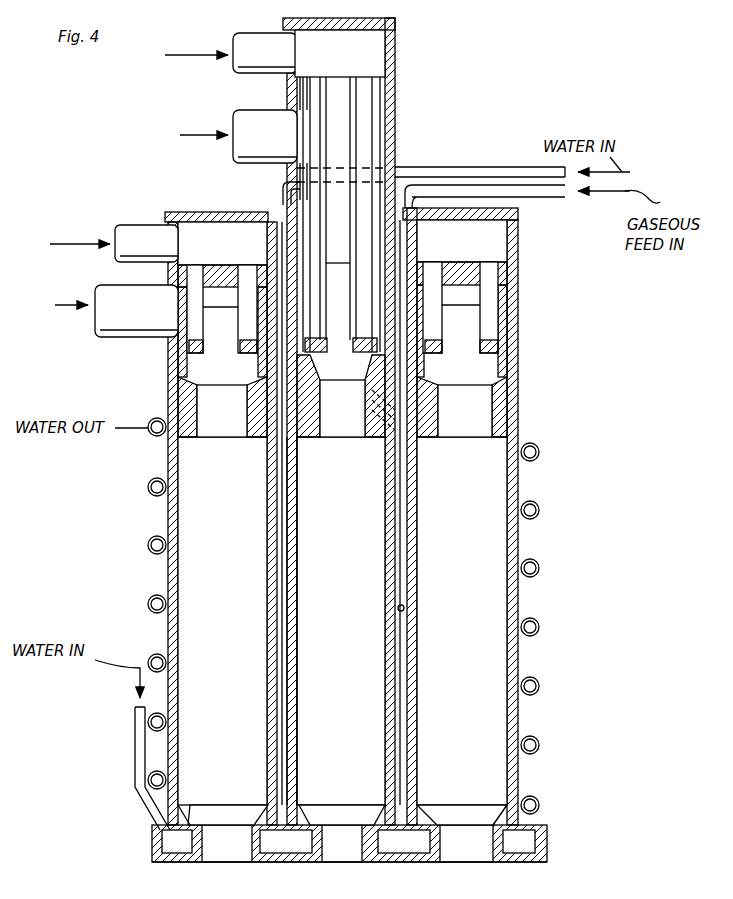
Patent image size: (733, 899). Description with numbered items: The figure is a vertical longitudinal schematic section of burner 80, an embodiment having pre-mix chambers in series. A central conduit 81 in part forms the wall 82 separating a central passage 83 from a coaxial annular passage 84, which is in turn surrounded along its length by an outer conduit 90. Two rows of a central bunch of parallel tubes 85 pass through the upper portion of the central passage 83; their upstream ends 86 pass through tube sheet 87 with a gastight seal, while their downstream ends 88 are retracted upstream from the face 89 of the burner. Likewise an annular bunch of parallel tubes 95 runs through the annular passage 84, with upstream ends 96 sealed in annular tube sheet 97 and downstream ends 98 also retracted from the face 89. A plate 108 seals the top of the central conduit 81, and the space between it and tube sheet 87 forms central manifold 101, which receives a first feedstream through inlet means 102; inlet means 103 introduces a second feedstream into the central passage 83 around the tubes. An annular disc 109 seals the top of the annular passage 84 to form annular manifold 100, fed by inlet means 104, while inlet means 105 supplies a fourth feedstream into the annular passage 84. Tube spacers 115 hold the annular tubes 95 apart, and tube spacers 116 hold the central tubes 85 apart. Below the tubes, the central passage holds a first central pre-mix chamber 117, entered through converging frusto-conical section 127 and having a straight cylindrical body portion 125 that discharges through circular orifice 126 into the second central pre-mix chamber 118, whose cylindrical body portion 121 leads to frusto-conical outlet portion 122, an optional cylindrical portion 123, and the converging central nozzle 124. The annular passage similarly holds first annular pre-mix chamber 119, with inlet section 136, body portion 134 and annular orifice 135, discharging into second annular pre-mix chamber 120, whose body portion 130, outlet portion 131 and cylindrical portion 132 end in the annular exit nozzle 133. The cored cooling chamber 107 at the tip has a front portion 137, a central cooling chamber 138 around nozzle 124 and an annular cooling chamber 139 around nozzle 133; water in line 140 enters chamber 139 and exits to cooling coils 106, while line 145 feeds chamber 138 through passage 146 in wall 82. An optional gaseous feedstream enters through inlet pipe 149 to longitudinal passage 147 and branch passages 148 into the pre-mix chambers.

The burner 80 is at (520, 330).
The central conduit 81 is at (395, 108).
The wall 82 is at (297, 642).
The central passage 83 is at (340, 53).
The annular passage 84 is at (185, 372).
The central bunch of parallel tubes 85 is at (300, 97).
The upstream ends 86 is at (383, 68).
The tube sheet 87 is at (370, 94).
The downstream ends 88 is at (320, 355).
The face 89 is at (170, 870).
The outer conduit 90 is at (520, 412).
The annular bunch of parallel tubes 95 is at (342, 268).
The upstream ends 96 is at (258, 262).
The tube sheet 97 is at (455, 215).
The downstream ends 98 is at (343, 342).
The annular manifold 100 is at (198, 212).
The central manifold 101 is at (380, 50).
The inlet means 102 is at (238, 46).
The inlet means 103 is at (238, 118).
The inlet means 104 is at (135, 228).
The inlet means 105 is at (105, 286).
The cooling coils 106 is at (148, 600).
The cored cooling chamber 107 is at (520, 840).
The plate 108 is at (360, 22).
The annular shaped disc 109 is at (180, 212).
The tube spacers 115 is at (198, 322).
The tube spacers 116 is at (300, 190).
The central pre-mix chamber 117 is at (358, 426).
The central pre-mix chamber 118 is at (357, 575).
The annular pre-mix chamber 119 is at (236, 425).
The annular pre-mix chamber 120 is at (228, 550).
The cylindrical body portion 121 is at (290, 690).
The frusto-conical outlet portion 122 is at (345, 843).
The normal cylindrical portion 123 is at (360, 830).
The converging central nozzle 124 is at (334, 830).
The straight coaxial cylindrical body portion 125 is at (305, 440).
The circular orifice 126 is at (345, 440).
The converging frusto-conical shaped section 127 is at (341, 396).
The cylindrical annular body portion 130 is at (178, 642).
The frusto-conical shaped annular outlet portion 131 is at (182, 812).
The normal cylindrical annular portion 132 is at (347, 843).
The converging annular exit nozzle 133 is at (222, 812).
The cylindrical annular body portion 134 is at (205, 440).
The annular orifice 135 is at (243, 440).
The converging frusto-conical shaped section 136 is at (492, 385).
The front portion 137 is at (525, 868).
The central annular shaped cooling chamber 138 is at (296, 812).
The annular shaped cooling chamber 139 is at (160, 845).
The line 140 is at (135, 740).
The line 145 is at (440, 168).
The passage 146 is at (283, 497).
The longitudinal passage 147 is at (400, 522).
The branch passage 148 is at (318, 440).
The inlet pipe 149 is at (565, 195).